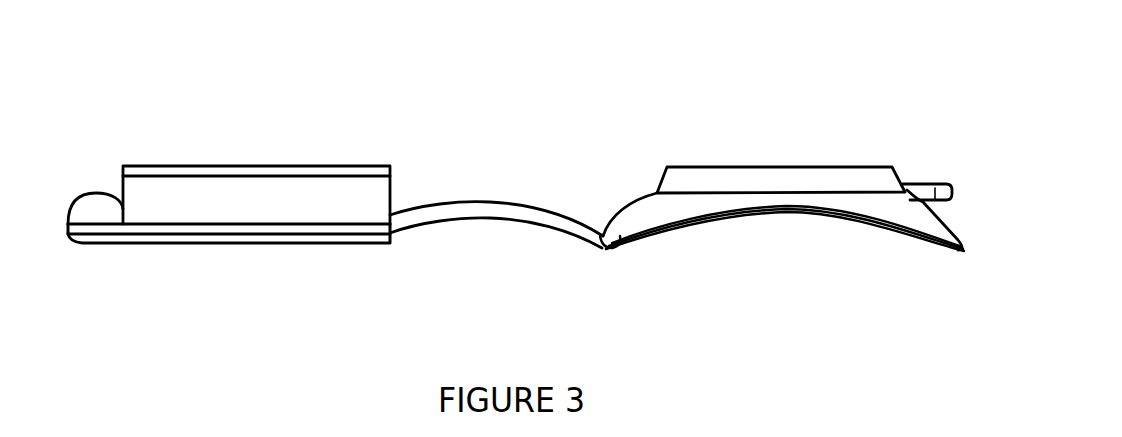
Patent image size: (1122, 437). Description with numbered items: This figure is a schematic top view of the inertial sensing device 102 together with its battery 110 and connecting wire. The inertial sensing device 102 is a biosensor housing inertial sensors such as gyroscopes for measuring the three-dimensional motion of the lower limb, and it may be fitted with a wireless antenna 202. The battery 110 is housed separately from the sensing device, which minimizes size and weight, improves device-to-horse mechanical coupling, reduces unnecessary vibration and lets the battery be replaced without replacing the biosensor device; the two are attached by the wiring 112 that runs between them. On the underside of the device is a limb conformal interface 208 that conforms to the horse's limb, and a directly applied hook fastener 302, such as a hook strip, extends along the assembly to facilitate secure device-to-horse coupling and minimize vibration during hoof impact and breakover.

The inertial sensing device 102 is at (705, 177).
The battery 110 is at (215, 189).
The wiring 112 is at (495, 210).
The wireless antenna 202 is at (935, 188).
The limb conformal interface 208 is at (602, 241).
The hook fastener 302 is at (767, 225).